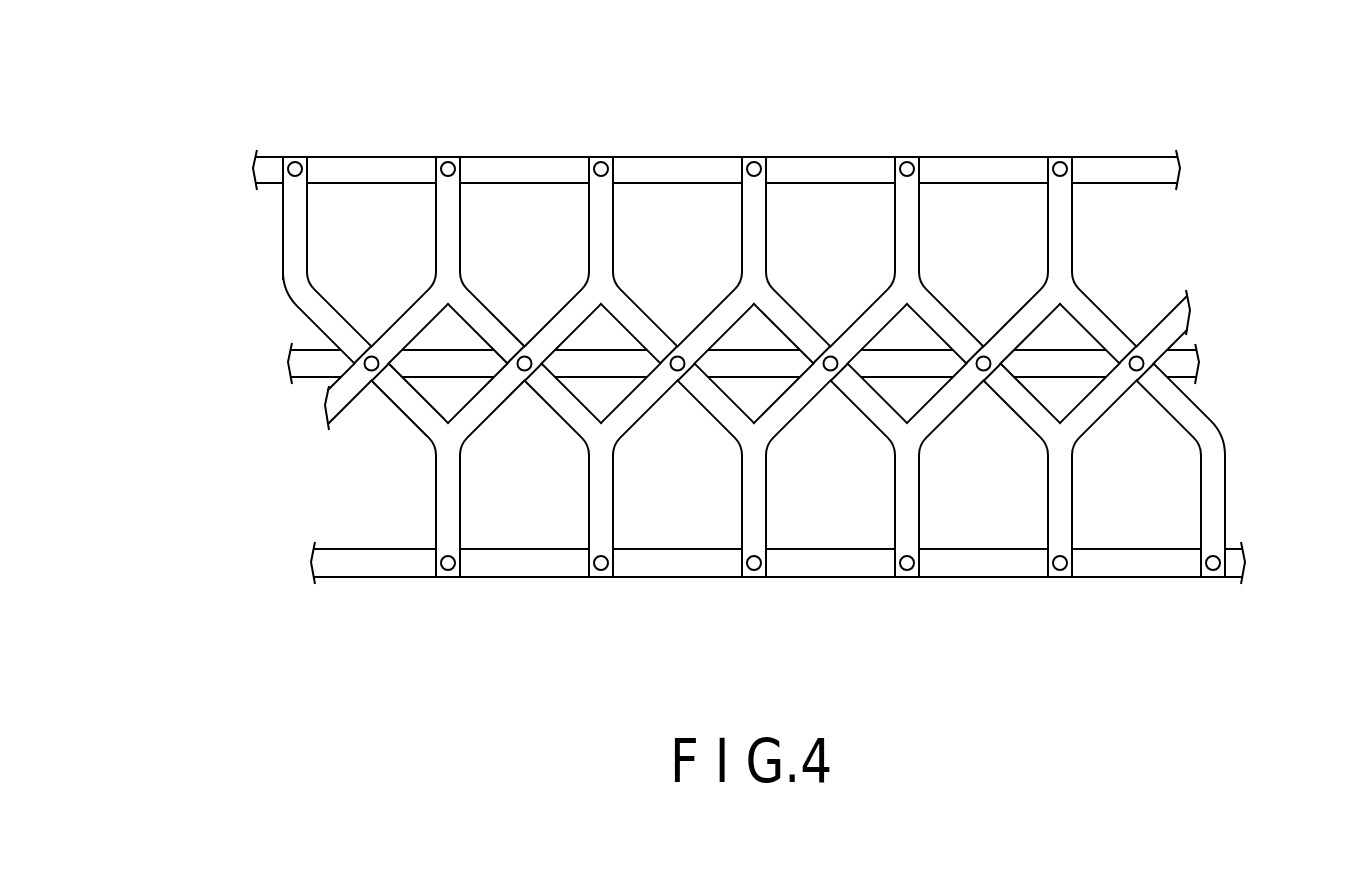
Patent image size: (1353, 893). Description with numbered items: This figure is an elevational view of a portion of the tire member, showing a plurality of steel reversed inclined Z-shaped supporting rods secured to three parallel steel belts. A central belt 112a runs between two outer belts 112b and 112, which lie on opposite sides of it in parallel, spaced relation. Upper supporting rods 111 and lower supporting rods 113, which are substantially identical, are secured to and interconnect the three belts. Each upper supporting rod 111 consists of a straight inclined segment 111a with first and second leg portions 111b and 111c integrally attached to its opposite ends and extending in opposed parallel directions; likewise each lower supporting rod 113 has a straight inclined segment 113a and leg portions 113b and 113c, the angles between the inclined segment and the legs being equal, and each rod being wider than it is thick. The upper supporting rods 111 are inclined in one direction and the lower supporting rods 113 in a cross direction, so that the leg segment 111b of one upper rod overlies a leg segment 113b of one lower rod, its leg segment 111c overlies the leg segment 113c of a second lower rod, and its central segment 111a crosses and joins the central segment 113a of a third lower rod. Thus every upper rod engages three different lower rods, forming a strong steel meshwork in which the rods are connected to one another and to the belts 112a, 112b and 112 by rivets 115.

The upper reversed inclined Z-shaped supporting rod 111 is at (1073, 214).
The straight inclined segment of upper supporting rod 111a is at (1098, 408).
The first leg portion of upper supporting rod 111b is at (912, 228).
The second leg portion of upper supporting rod 111c is at (912, 518).
The outer belt 112 is at (790, 560).
The central belt 112a is at (777, 362).
The outer belt 112b is at (525, 166).
The lower reversed inclined Z-shaped supporting rod 113 is at (308, 229).
The straight inclined segment of lower supporting rod 113a is at (417, 417).
The first leg portion of lower supporting rod 113b is at (285, 262).
The second leg portion of lower supporting rod 113c is at (1222, 498).
The rivet 115 is at (527, 372).